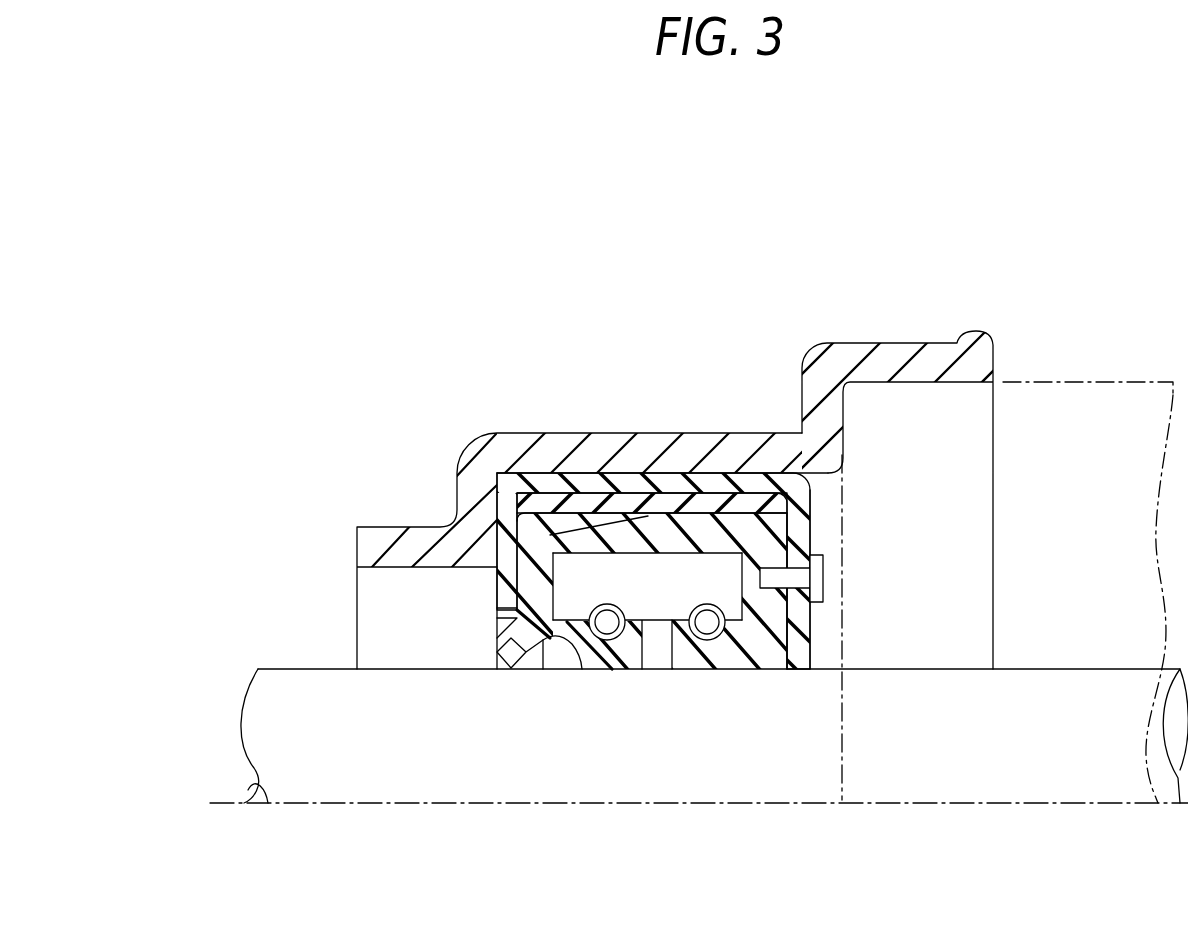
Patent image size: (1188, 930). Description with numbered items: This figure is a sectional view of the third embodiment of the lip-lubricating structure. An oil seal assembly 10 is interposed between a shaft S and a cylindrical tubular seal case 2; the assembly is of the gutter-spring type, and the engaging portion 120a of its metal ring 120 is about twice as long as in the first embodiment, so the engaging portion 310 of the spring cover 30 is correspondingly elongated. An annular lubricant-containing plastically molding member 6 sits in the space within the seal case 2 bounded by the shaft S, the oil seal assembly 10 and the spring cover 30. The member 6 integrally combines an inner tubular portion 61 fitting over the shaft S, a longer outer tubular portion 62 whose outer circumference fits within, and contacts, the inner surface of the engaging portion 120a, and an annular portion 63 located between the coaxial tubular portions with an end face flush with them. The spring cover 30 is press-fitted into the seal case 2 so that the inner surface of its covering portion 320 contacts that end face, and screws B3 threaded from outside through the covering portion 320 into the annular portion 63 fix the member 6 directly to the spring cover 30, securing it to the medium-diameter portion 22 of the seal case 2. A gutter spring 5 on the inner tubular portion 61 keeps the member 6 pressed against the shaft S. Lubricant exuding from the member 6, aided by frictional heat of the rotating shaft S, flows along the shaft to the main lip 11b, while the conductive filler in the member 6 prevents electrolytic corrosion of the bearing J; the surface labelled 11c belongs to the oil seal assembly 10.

The seal case 2 is at (635, 588).
The gutter spring 5 is at (690, 625).
The plastically molding member 6 is at (623, 616).
The oil seal assembly 10 is at (609, 506).
The main lip 11b is at (614, 652).
The housing inner peripheral surface 11c is at (540, 542).
The medium-diameter portion 22 is at (600, 453).
The spring cover 30 is at (779, 458).
The inner tubular portion 61 is at (728, 655).
The outer tubular portion 62 is at (713, 533).
The annular portion 63 is at (775, 623).
The metal ring 120 is at (635, 616).
The engaging portion 120a is at (648, 492).
The engaging portion 310 is at (553, 478).
The covering portion 320 is at (800, 663).
The screws B3 is at (822, 570).
The bearing J is at (1136, 382).
The shaft S is at (300, 788).